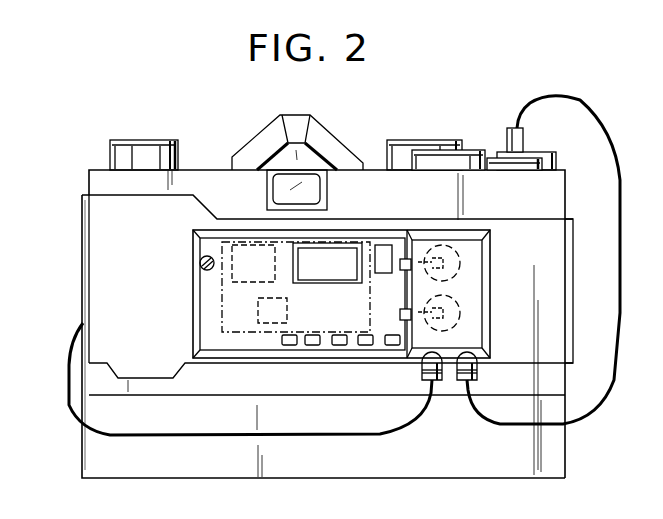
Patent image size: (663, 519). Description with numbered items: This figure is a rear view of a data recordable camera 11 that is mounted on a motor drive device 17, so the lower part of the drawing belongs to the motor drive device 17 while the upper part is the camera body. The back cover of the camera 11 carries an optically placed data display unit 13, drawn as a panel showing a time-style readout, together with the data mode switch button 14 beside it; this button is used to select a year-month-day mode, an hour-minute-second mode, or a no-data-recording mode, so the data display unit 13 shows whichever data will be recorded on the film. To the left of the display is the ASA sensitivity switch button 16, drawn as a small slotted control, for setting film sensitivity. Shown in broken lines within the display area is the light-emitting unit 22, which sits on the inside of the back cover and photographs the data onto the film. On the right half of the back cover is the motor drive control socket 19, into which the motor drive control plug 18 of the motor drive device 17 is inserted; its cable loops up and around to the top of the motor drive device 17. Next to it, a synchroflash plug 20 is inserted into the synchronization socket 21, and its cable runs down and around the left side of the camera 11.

The data recordable camera 11 is at (563, 190).
The data display unit 13 is at (352, 243).
The data mode switch button 14 is at (382, 245).
The ASA sensitivity switch button 16 is at (200, 263).
The motor drive device 17 is at (558, 458).
The motor drive control plug 18 is at (478, 396).
The motor drive control socket 19 is at (477, 363).
The synchroflash plug 20 is at (437, 383).
The synchronization socket 21 is at (425, 360).
The light-emitting unit 22 is at (247, 246).